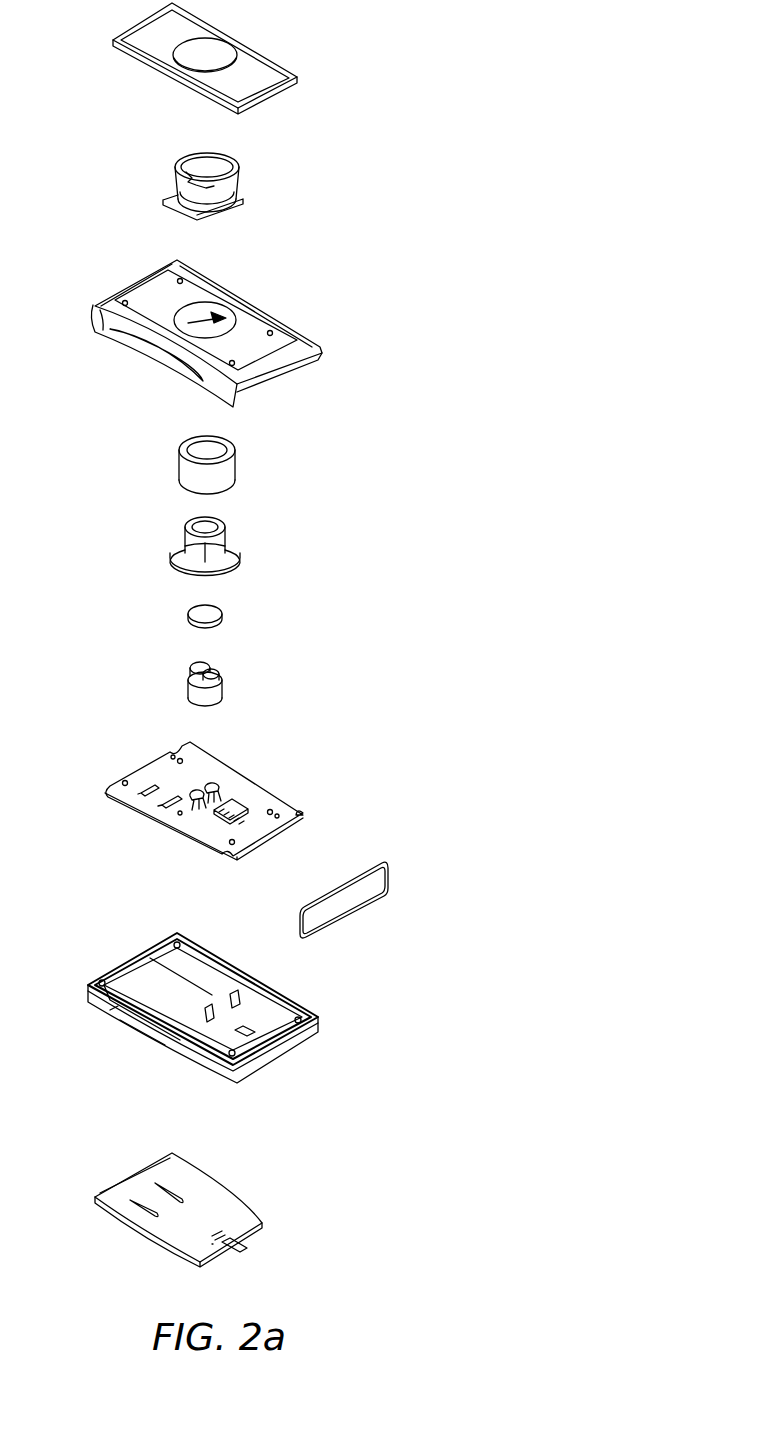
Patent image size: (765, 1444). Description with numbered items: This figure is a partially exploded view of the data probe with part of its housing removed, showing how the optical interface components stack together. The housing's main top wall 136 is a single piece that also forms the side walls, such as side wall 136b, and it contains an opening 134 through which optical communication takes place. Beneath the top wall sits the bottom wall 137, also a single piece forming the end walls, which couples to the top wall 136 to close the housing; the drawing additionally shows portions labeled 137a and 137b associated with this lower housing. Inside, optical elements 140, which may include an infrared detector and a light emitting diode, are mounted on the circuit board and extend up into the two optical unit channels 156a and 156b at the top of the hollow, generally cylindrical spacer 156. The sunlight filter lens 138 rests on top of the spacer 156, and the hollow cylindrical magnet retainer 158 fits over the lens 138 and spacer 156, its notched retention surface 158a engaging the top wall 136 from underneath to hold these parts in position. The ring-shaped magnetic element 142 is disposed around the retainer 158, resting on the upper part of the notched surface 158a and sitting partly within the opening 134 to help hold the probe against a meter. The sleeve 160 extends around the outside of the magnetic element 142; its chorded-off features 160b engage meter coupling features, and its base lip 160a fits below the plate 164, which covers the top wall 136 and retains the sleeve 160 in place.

The plate 164 is at (262, 68).
The sleeve 160 is at (196, 158).
The lip 160a is at (165, 207).
The features for engaging mechanical coupling features 160b is at (182, 166).
The opening 134 is at (192, 325).
The top wall 136 is at (176, 339).
The side wall 136b is at (155, 362).
The magnetic element 142 is at (240, 462).
The magnet retainer 158 is at (265, 544).
The notched retention surface 158a is at (242, 557).
The lens 138 is at (188, 612).
The spacer 156 is at (209, 673).
The optical unit channel 156a is at (216, 668).
The optical unit channel 156b is at (193, 667).
The optical elements 140 is at (204, 790).
The bottom wall 137 is at (255, 972).
The lower housing floor 137a is at (200, 975).
The battery cover 137b is at (222, 1206).